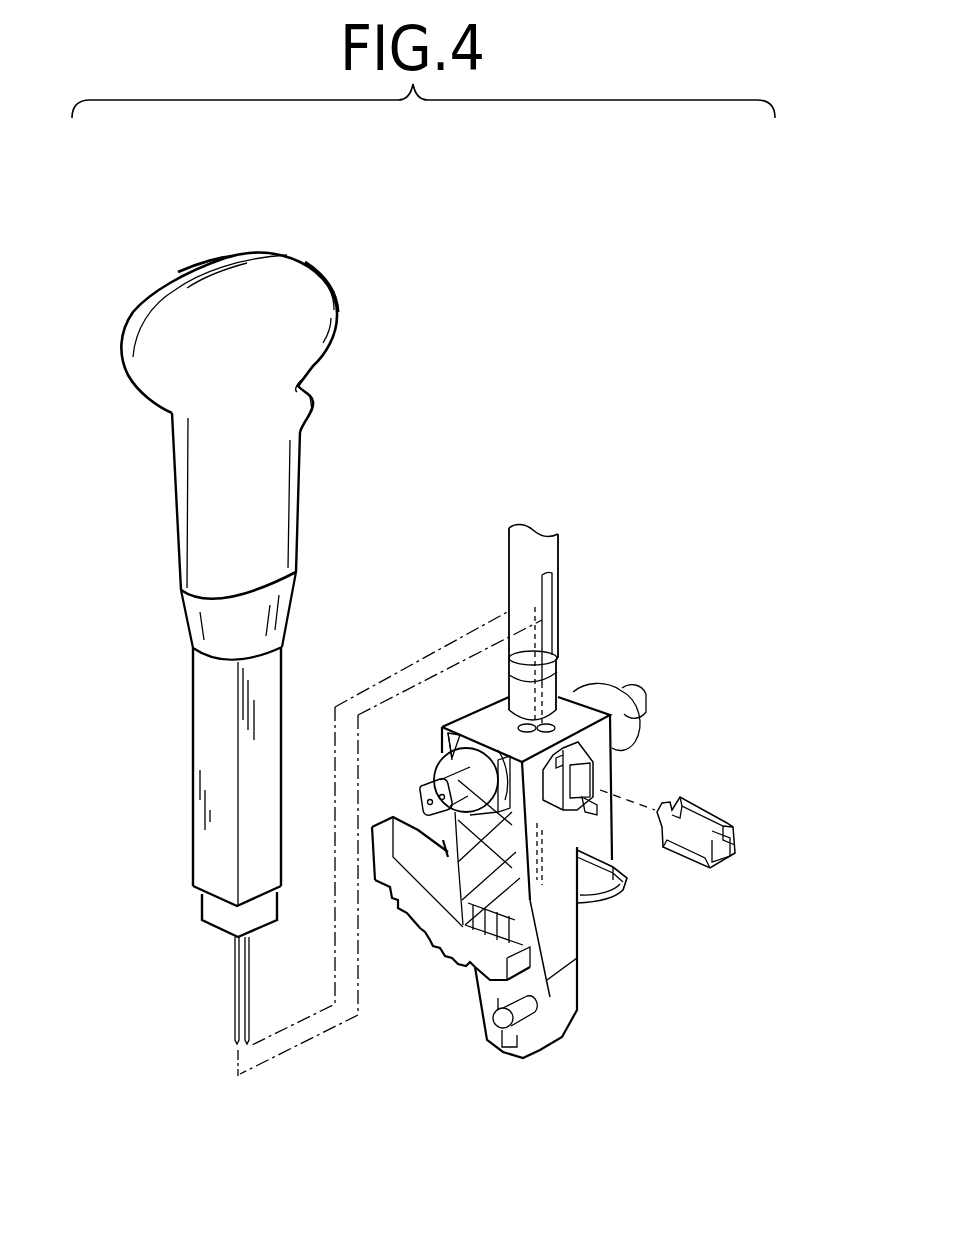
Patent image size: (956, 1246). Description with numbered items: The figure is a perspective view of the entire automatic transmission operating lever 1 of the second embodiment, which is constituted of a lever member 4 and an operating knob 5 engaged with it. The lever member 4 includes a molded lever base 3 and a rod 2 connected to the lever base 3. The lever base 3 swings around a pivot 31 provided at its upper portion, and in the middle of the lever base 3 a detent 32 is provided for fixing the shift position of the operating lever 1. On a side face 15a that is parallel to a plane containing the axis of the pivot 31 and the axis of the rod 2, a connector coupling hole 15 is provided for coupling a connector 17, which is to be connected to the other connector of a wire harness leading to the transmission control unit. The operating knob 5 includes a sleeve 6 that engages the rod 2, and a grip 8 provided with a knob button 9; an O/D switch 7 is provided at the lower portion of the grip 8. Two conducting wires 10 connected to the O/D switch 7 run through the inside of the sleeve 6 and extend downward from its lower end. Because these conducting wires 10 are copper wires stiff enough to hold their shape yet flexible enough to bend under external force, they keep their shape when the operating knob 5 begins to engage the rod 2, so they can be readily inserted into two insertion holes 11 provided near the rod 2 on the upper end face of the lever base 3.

The operating lever 1 is at (567, 257).
The rod 2 is at (560, 550).
The lever base 3 is at (557, 930).
The lever member 4 is at (520, 1063).
The operating knob 5 is at (162, 289).
The sleeve 6 is at (193, 700).
The O/D switch 7 is at (318, 393).
The grip 8 is at (234, 248).
The knob button 9 is at (336, 287).
The conducting wires 10 is at (234, 992).
The insertion holes 11 is at (523, 727).
The connector coupling hole 15 is at (588, 778).
The side face 15a is at (557, 868).
The connector 17 is at (710, 820).
The pivot 31 is at (437, 784).
The detent 32 is at (433, 937).